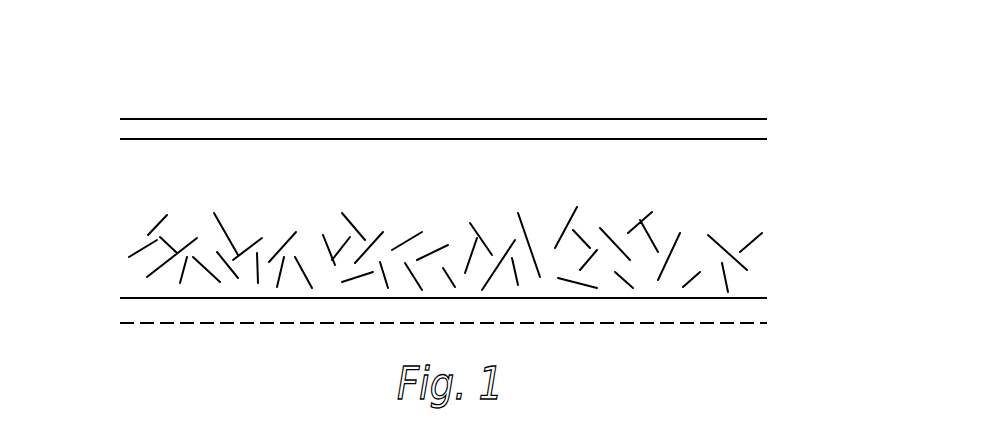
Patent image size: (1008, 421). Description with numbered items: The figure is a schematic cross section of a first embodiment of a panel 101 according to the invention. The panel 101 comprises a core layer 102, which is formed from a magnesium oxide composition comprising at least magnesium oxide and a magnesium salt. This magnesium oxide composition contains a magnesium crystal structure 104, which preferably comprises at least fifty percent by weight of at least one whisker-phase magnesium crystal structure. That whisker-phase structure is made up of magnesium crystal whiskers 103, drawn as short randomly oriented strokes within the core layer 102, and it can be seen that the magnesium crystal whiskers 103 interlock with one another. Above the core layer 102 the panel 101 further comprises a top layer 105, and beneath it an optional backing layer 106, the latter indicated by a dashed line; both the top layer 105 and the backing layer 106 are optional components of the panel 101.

The panel 101 is at (120, 88).
The core layer 102 is at (759, 216).
The magnesium crystal whiskers 103 is at (382, 232).
The magnesium crystal structure 104 is at (127, 232).
The top layer 105 is at (759, 130).
The backing layer 106 is at (760, 313).